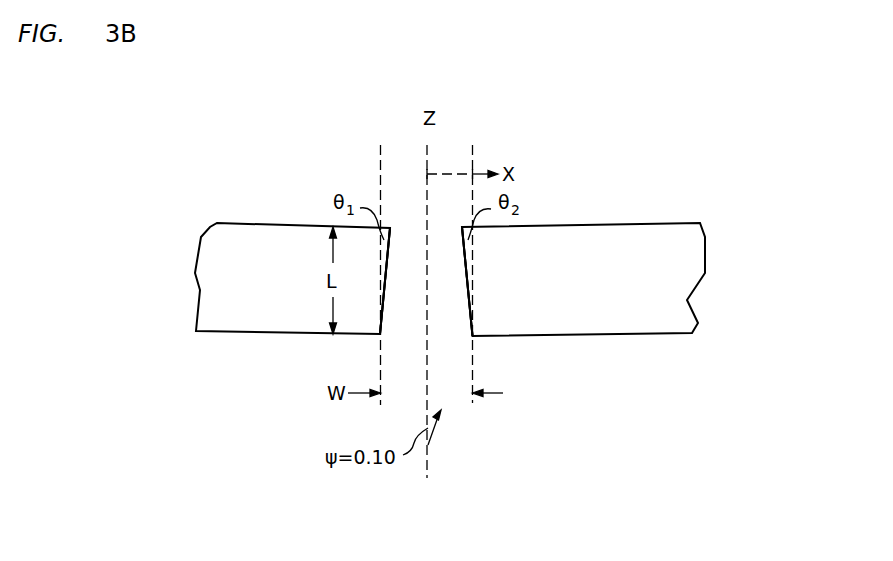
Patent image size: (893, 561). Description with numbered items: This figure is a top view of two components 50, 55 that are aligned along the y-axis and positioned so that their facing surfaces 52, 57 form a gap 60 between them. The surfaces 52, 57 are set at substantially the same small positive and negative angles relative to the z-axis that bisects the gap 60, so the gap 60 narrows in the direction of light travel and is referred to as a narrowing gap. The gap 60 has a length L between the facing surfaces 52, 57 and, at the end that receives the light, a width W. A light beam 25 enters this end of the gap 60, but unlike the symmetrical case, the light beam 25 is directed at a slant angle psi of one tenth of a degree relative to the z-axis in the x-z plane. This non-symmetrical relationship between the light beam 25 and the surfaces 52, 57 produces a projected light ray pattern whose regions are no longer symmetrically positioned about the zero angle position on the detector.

The component 50 is at (276, 288).
The component 55 is at (615, 288).
The gap 60 is at (422, 259).
The surface 52 is at (383, 290).
The surface 57 is at (464, 290).
The light beam 25 is at (430, 447).